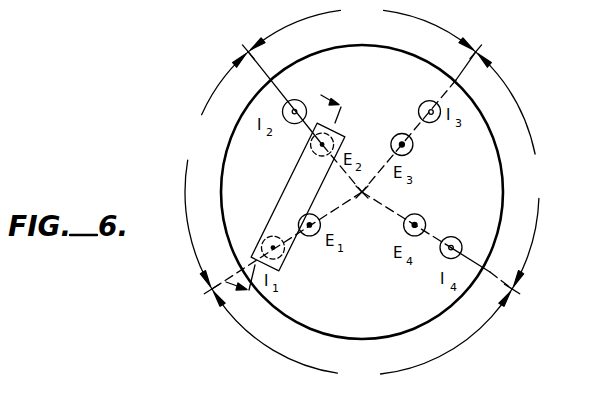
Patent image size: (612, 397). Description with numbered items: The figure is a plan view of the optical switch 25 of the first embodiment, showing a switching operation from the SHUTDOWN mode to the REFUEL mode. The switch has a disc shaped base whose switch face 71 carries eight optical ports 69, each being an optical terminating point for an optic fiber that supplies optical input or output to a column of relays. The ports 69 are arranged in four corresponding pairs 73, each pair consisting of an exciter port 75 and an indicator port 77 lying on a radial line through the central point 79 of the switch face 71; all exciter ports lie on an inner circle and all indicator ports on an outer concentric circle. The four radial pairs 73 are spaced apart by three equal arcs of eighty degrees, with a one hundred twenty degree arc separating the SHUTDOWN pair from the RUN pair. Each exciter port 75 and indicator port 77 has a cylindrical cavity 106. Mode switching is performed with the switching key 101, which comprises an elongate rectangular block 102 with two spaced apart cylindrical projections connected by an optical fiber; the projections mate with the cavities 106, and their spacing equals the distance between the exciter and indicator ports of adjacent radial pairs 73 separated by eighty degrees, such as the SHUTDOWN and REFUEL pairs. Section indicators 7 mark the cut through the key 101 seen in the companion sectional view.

The optical switch 25 is at (527, 259).
The switch face 71 is at (370, 316).
The switching key 101 is at (291, 173).
The elongate rectangular block 102 is at (300, 157).
The optical port 69 is at (294, 110).
The exciter port 75 is at (413, 150).
The indicator port 77 is at (433, 123).
The cylindrical cavity 106 is at (391, 141).
The corresponding pair of ports 73 is at (426, 222).
The central point 79 is at (362, 193).
The section line 7 is at (283, 198).